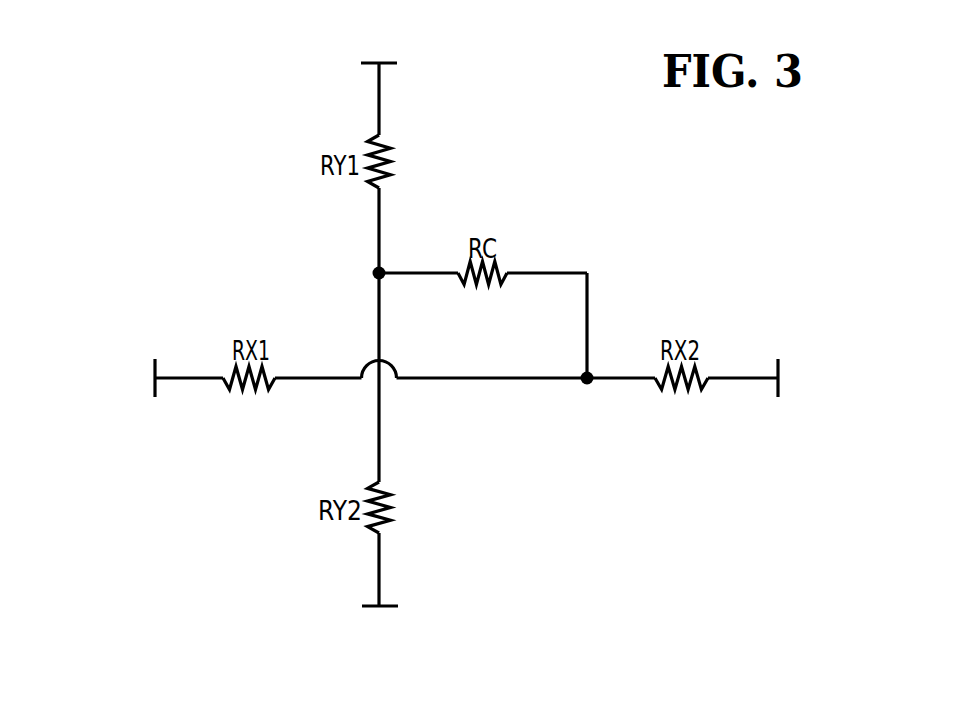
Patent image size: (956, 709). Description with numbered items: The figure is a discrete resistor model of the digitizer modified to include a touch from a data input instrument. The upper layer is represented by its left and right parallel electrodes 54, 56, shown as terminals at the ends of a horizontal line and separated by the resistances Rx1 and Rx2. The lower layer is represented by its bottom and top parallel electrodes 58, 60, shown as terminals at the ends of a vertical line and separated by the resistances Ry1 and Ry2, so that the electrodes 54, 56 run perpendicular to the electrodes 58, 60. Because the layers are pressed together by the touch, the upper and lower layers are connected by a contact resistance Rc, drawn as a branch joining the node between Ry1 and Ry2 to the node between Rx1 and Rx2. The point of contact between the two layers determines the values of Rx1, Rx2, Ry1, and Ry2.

The left electrode 54 is at (103, 378).
The right electrode 56 is at (835, 378).
The bottom electrode 58 is at (381, 625).
The top electrode 60 is at (377, 48).